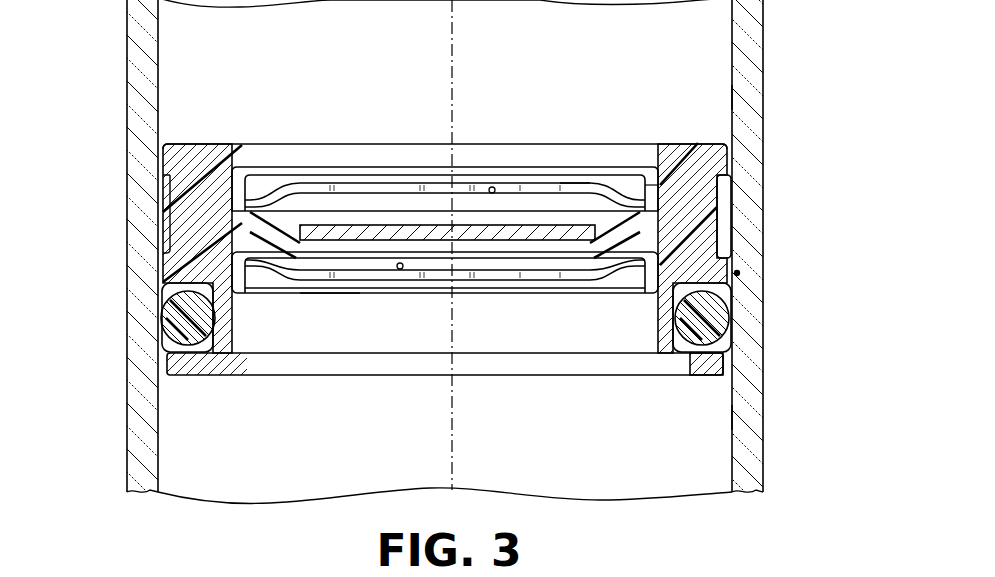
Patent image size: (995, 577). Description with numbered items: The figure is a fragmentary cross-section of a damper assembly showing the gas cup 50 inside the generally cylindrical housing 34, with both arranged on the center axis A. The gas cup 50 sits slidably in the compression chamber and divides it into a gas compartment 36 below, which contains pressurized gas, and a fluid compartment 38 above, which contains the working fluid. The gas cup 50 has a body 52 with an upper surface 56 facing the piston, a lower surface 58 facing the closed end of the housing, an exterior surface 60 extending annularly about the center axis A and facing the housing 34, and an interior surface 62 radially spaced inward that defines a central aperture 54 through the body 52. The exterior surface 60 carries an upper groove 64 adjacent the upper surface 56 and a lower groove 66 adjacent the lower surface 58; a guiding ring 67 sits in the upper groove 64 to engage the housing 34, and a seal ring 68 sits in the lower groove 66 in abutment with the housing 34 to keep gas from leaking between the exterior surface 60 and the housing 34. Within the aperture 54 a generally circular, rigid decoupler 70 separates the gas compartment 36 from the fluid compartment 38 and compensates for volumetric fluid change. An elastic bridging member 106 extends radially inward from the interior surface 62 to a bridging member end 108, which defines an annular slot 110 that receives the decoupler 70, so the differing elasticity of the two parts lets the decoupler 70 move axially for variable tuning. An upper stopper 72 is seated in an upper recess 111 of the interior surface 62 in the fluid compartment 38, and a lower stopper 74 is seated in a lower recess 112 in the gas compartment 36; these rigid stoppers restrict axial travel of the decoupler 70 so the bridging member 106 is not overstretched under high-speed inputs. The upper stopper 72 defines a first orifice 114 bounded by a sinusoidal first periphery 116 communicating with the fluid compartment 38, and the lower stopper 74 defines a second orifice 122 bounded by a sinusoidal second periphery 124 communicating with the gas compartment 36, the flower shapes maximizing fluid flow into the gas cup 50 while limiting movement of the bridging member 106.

The housing 34 is at (757, 65).
The gas compartment 36 is at (738, 424).
The fluid compartment 38 is at (740, 102).
The gas cup 50 is at (737, 273).
The body 52 is at (197, 173).
The aperture 54 is at (725, 360).
The upper surface 56 is at (676, 143).
The lower surface 58 is at (697, 376).
The exterior surface 60 is at (162, 163).
The interior surface 62 is at (692, 152).
The upper groove 64 is at (178, 253).
The lower groove 66 is at (173, 330).
The guiding ring 67 is at (727, 216).
The seal ring 68 is at (715, 313).
The decoupler 70 is at (522, 233).
The upper stopper 72 is at (267, 192).
The lower stopper 74 is at (285, 273).
The bridging member 106 is at (720, 246).
The bridging member end 108 is at (298, 222).
The slot 110 is at (232, 222).
The upper recess 111 is at (663, 185).
The lower recess 112 is at (233, 270).
The first orifice 114 is at (492, 188).
The first periphery 116 is at (573, 187).
The second orifice 122 is at (400, 269).
The second periphery 124 is at (332, 294).
The center axis A is at (452, 70).